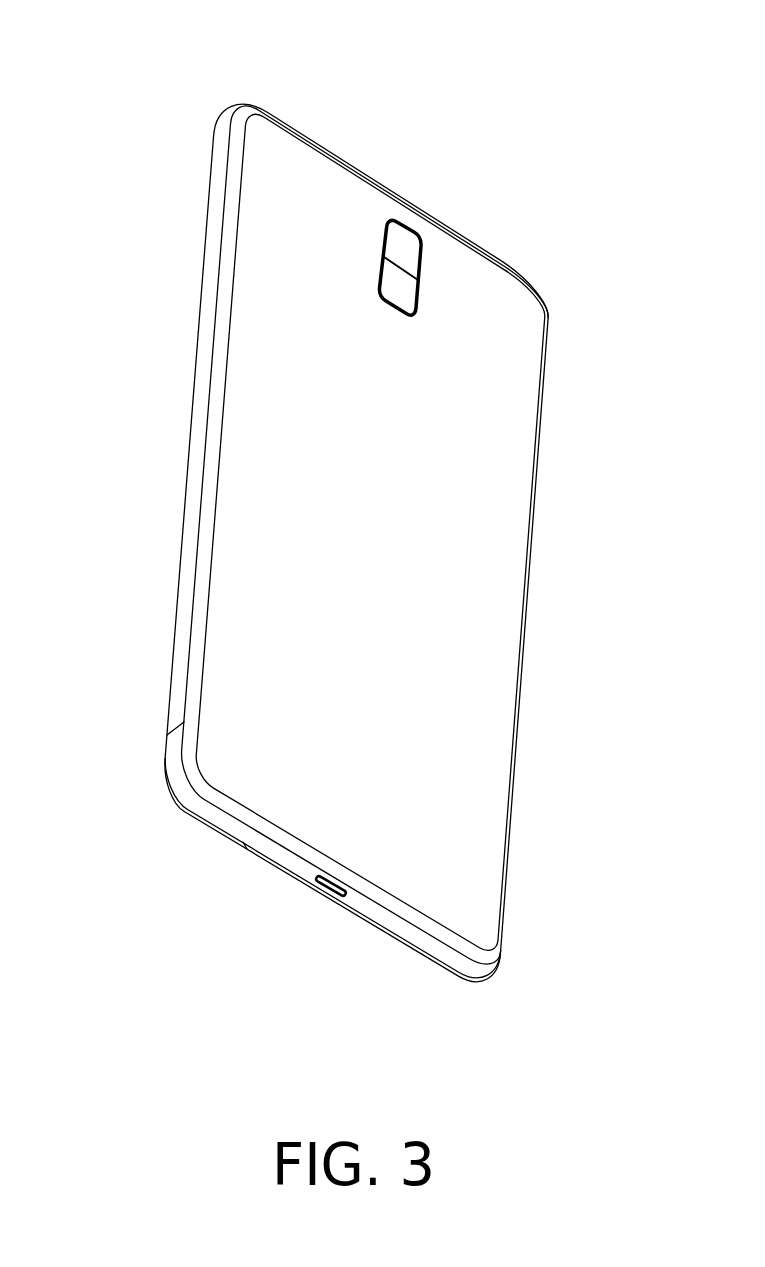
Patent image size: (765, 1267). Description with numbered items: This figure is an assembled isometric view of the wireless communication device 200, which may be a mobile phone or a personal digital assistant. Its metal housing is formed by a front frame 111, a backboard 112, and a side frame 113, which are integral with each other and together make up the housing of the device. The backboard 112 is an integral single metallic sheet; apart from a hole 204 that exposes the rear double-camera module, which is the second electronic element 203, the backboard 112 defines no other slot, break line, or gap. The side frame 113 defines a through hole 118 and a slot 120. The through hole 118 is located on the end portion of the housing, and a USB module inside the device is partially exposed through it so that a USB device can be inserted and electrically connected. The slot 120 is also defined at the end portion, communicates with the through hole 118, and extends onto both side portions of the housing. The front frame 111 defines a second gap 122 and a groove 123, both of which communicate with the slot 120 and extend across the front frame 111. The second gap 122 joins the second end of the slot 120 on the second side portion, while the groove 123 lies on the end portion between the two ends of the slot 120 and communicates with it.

The wireless communication device 200 is at (335, 44).
The front frame 111 is at (413, 950).
The backboard 112 is at (488, 762).
The side frame 113 is at (186, 528).
The through hole 118 is at (320, 888).
The slot 120 is at (457, 966).
The second gap 122 is at (167, 734).
The groove 123 is at (244, 846).
The second electronic element 203 is at (402, 243).
The hole 204 is at (419, 292).